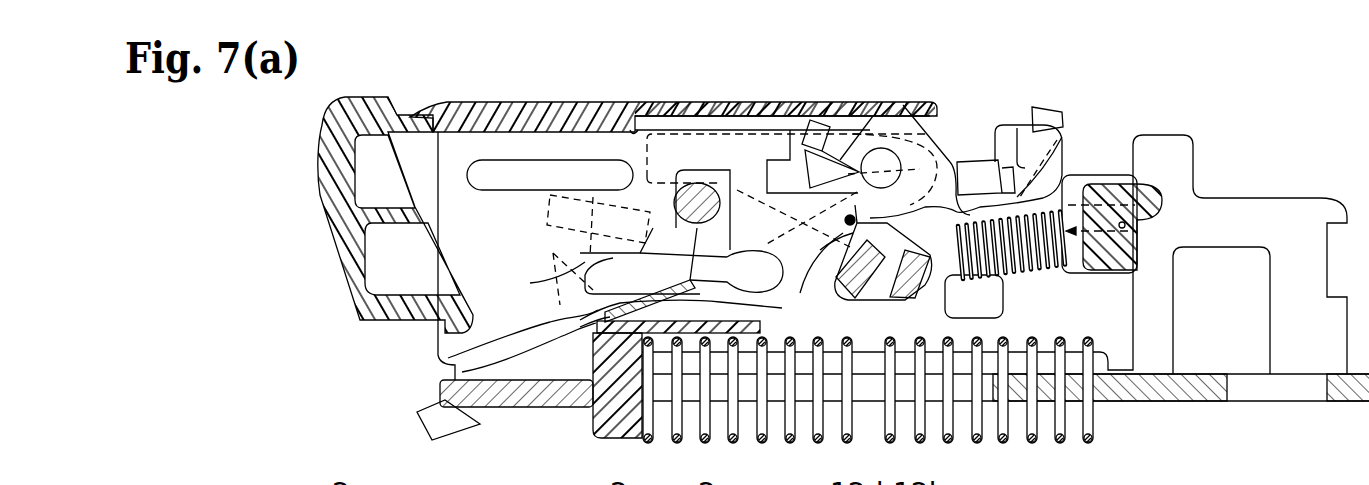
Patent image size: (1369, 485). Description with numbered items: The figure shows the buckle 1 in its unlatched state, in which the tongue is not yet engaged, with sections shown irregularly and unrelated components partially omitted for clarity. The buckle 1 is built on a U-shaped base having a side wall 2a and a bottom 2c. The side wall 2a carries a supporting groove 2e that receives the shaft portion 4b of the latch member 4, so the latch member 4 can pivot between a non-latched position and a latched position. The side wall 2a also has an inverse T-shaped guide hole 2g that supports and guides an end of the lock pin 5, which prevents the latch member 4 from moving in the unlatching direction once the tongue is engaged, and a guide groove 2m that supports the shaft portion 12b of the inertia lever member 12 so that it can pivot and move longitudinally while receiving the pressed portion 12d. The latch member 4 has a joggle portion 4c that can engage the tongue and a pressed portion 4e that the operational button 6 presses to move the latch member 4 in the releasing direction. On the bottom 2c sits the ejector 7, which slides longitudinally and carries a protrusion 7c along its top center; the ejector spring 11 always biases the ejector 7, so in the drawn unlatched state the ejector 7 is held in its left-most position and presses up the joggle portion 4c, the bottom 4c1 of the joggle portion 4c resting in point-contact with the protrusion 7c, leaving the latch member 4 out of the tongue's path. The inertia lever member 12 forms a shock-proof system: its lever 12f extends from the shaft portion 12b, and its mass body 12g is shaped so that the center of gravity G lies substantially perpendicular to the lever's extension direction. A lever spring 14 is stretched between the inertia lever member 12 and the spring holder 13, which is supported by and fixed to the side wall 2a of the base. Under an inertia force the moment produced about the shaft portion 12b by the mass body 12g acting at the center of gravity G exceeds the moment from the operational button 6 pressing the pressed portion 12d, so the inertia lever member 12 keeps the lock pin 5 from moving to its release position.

The buckle 1 is at (470, 93).
The side wall 2a is at (1223, 217).
The bottom 2c is at (1153, 390).
The supporting groove 2e is at (984, 160).
The guide hole 2g is at (557, 275).
The guide groove 2m is at (772, 177).
The latch member 4 is at (780, 310).
The shaft portion 4b is at (975, 177).
The joggle portion 4c is at (458, 372).
The bottom of the joggle portion 4c1 is at (493, 407).
The pressed portion 4e is at (1050, 117).
The lock pin 5 is at (625, 163).
The operational button 6 is at (368, 112).
The ejector 7 is at (600, 404).
The protrusion 7c is at (547, 412).
The ejector spring 11 is at (1010, 437).
The inertia lever member 12 is at (950, 172).
The shaft portion 12b is at (884, 160).
The pressed portion 12d is at (826, 135).
The lever 12f is at (683, 100).
The mass body 12g is at (876, 288).
The spring holder 13 is at (1105, 185).
The lever spring 14 is at (1033, 265).
The center of gravity G is at (862, 210).